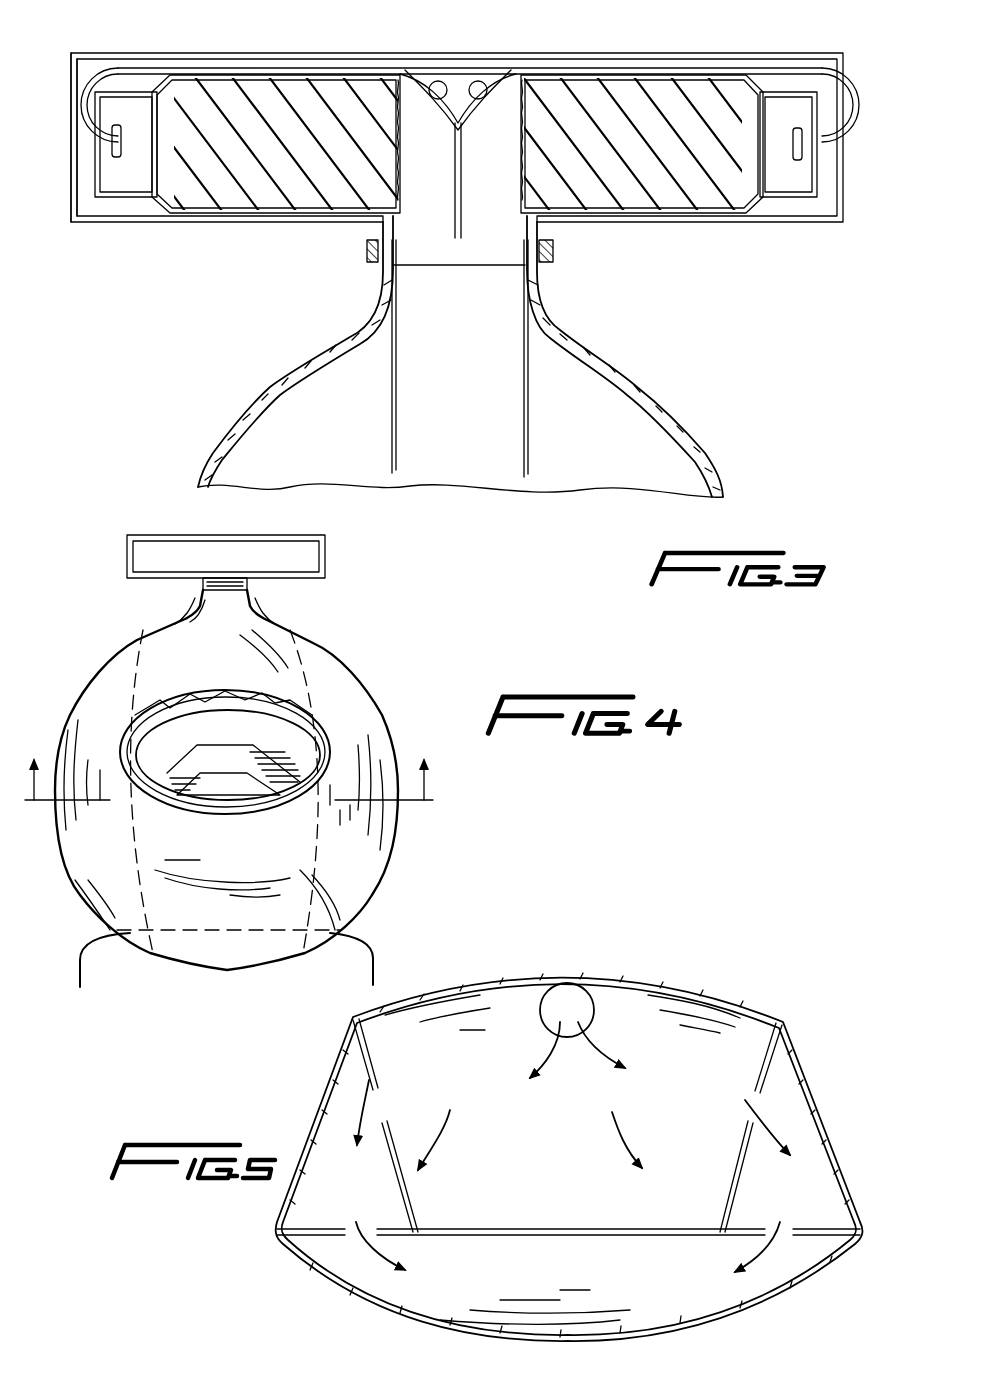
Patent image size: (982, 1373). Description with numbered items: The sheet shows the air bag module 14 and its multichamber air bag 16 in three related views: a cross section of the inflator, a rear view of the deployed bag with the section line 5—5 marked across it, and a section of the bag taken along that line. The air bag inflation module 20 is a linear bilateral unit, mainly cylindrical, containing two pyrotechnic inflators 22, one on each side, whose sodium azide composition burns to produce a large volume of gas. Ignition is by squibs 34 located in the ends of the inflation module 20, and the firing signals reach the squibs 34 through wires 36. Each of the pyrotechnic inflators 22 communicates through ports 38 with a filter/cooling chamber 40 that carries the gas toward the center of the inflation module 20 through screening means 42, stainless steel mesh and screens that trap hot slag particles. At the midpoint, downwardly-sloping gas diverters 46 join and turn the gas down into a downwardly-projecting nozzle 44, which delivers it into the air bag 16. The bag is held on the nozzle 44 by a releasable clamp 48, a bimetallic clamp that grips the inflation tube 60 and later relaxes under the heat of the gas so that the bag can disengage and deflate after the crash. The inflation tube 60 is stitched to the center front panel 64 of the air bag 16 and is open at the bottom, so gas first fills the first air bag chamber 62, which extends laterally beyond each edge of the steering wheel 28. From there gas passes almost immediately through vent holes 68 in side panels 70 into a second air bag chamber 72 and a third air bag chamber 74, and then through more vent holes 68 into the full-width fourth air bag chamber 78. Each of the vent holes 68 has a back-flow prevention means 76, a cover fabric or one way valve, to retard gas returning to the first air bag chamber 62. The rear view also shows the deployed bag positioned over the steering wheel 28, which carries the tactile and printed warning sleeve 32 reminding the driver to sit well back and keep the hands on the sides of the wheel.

In FIG. 3, the air bag module 14 is at (628, 46).
In FIG. 4, the air bag module 14 is at (168, 530).
In FIG. 3, the air bag 16 is at (667, 372).
In FIG. 4, the air bag 16 is at (338, 642).
In FIG. 5, the air bag 16 is at (569, 1157).
In FIG. 3, the air bag inflation module 20 is at (543, 73).
In FIG. 3, the pyrotechnic inflators 22 is at (111, 105).
In FIG. 4, the steering wheel 28 is at (207, 818).
In FIG. 4, the warning sleeve 32 is at (258, 695).
In FIG. 3, the squibs 34 is at (121, 165).
In FIG. 3, the wires 36 is at (90, 75).
In FIG. 3, the ports 38 is at (160, 110).
In FIG. 3, the filter/cooling chamber 40 is at (296, 87).
In FIG. 3, the screening means 42 is at (295, 147).
In FIG. 3, the nozzle 44 is at (400, 245).
In FIG. 3, the gas diverters 46 is at (428, 66).
In FIG. 3, the releasable clamp 48 is at (556, 250).
In FIG. 3, the inflation tube 60 is at (390, 378).
In FIG. 5, the first air bag chamber 62 is at (573, 1192).
In FIG. 4, the center front panel 64 is at (205, 887).
In FIG. 5, the vent holes 68 is at (355, 1110).
In FIG. 5, the side panels 70 is at (410, 1200).
In FIG. 4, the second air bag chamber 72 is at (355, 712).
In FIG. 5, the second air bag chamber 72 is at (810, 1130).
In FIG. 4, the third air bag chamber 74 is at (108, 690).
In FIG. 5, the third air bag chamber 74 is at (345, 1078).
In FIG. 5, the back-flow prevention means 76 is at (360, 1098).
In FIG. 5, the fourth air bag chamber 78 is at (568, 1257).
In FIG. 4, the section line 5— 5 is at (229, 802).